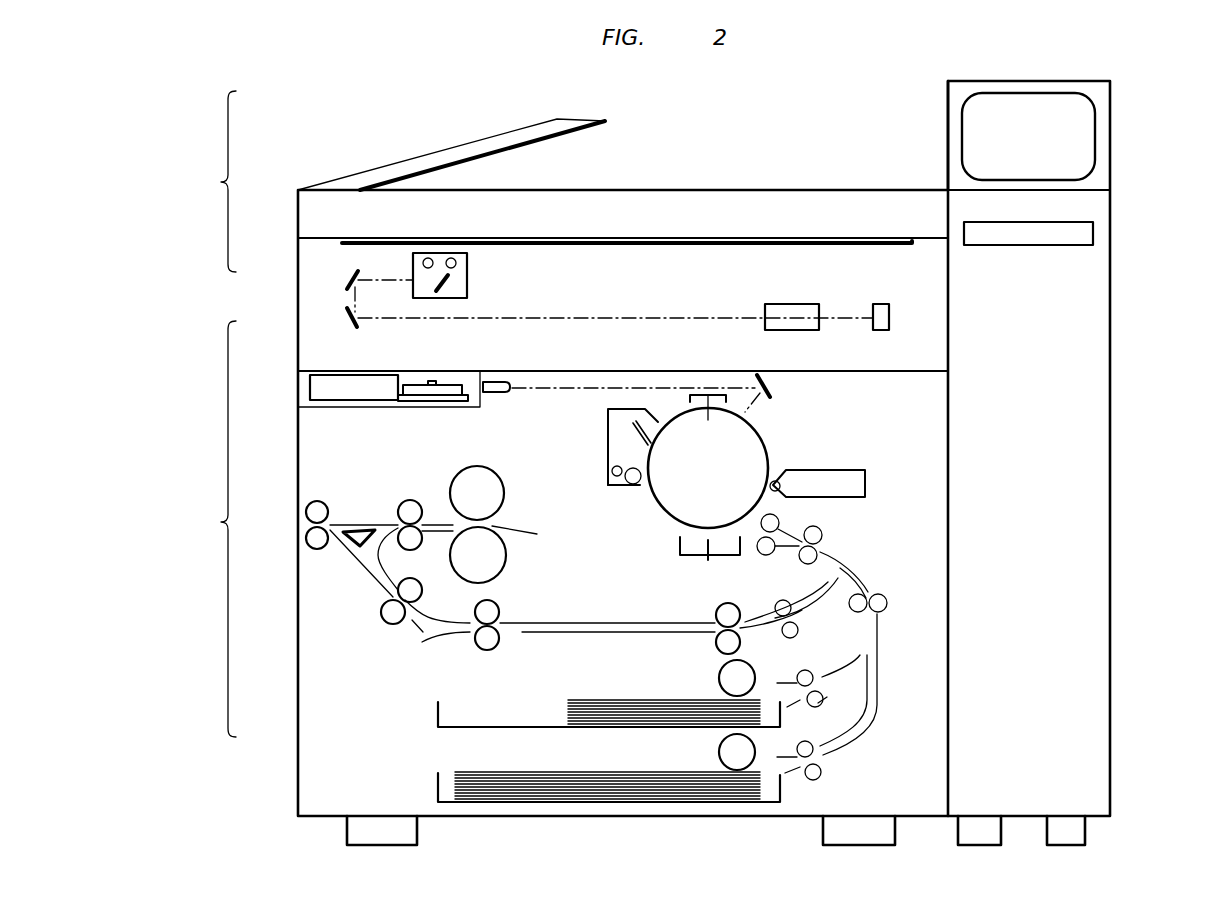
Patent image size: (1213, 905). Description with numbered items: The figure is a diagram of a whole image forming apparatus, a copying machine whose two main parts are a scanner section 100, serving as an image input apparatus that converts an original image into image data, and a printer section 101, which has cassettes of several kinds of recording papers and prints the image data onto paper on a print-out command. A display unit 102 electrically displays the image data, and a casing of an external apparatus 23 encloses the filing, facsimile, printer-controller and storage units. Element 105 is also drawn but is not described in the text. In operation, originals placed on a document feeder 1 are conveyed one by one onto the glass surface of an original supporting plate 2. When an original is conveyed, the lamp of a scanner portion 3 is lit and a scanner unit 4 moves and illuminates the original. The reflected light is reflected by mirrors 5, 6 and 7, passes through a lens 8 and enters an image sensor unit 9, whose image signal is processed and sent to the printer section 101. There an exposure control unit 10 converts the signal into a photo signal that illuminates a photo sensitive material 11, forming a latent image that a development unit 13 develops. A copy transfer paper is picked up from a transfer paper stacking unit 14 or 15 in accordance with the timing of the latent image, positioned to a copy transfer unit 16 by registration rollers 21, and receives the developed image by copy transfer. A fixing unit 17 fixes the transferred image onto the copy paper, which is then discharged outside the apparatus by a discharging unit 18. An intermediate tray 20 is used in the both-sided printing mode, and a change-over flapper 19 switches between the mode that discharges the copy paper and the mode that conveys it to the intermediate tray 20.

The document feeder 1 is at (378, 167).
The original supporting plate 2 is at (890, 242).
The scanner portion 3 is at (456, 257).
The scanner unit 4 is at (465, 268).
The mirror 5 is at (440, 283).
The mirror 6 is at (348, 276).
The mirror 7 is at (346, 318).
The lens 8 is at (790, 304).
The image sensor unit 9 is at (889, 318).
The exposure control unit 10 is at (430, 386).
The photo sensitive material 11 is at (708, 408).
The development unit 13 is at (865, 483).
The transfer paper stacking unit 14 is at (778, 712).
The transfer paper stacking unit 15 is at (778, 766).
The copy transfer unit 16 is at (740, 554).
The fixing unit 17 is at (455, 553).
The discharging unit 18 is at (308, 534).
The change-over flapper 19 is at (352, 533).
The intermediate tray 20 is at (556, 630).
The registration rollers 21 is at (776, 545).
The external apparatus 23 is at (1098, 427).
The scanner section 100 is at (205, 181).
The printer section 101 is at (205, 529).
The display unit 102 is at (1093, 130).
The operation panel 105 is at (1092, 230).